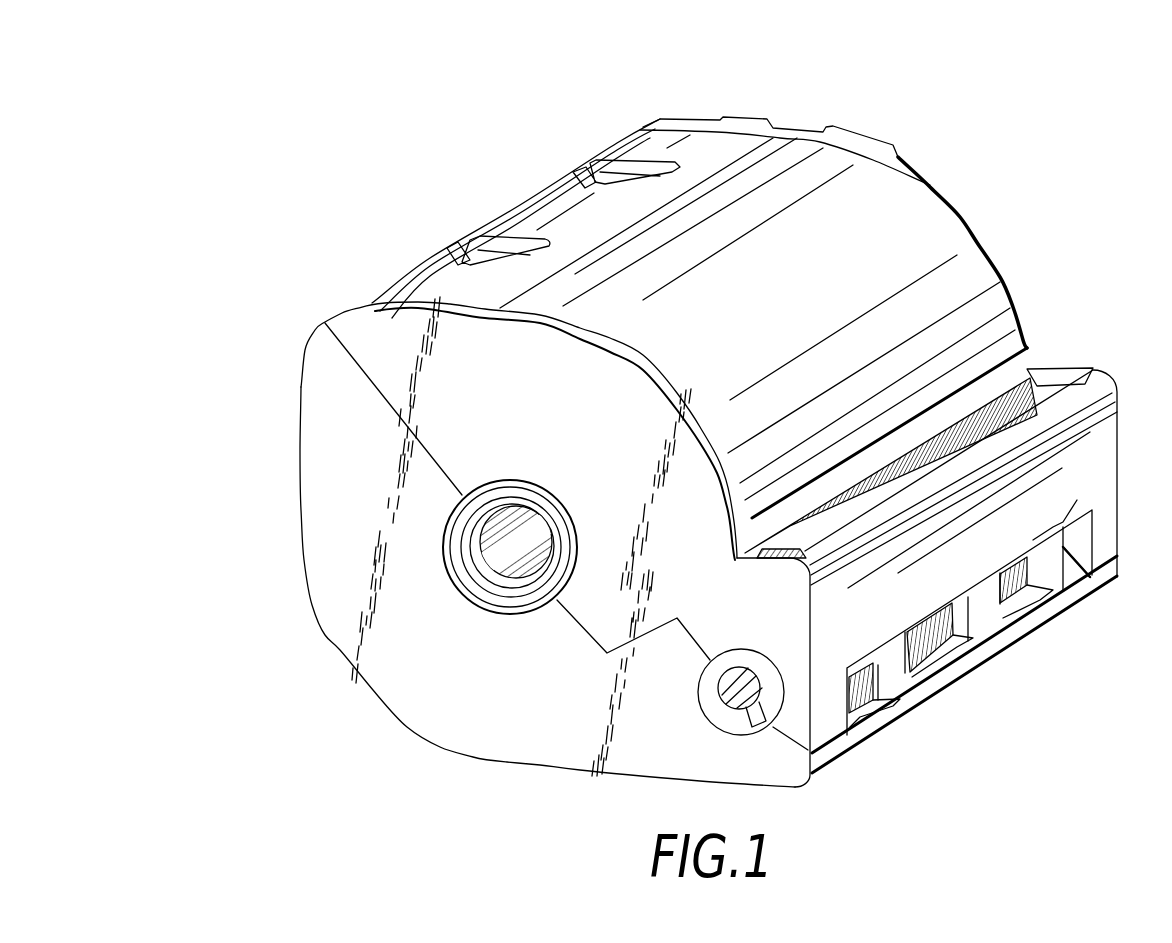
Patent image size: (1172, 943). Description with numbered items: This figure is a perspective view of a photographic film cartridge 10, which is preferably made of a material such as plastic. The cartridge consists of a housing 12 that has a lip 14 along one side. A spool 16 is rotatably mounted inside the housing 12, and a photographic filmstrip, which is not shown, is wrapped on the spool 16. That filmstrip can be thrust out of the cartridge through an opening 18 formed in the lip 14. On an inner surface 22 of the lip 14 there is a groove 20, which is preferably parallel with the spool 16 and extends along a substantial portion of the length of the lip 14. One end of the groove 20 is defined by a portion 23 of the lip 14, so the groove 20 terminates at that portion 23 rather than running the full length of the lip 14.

The film cartridge 10 is at (310, 762).
The housing 12 is at (935, 172).
The lip 14 is at (1097, 467).
The spool 16 is at (505, 550).
The opening 18 is at (957, 667).
The groove 20 is at (1030, 397).
The inner surface 22 is at (1063, 370).
The portion 23 is at (763, 560).